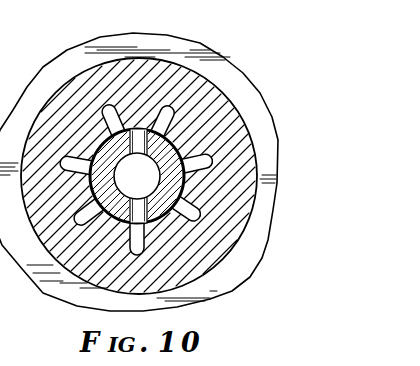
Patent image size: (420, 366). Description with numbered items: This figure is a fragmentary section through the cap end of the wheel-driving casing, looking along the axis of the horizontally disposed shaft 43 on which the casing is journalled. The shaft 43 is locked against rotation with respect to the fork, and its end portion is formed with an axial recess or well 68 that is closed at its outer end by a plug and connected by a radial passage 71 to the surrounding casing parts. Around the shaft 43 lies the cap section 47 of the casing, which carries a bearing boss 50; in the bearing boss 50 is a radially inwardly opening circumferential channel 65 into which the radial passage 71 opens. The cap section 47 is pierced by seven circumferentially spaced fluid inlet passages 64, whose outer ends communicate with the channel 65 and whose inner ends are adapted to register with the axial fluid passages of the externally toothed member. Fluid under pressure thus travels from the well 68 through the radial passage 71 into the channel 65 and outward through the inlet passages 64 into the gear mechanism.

The cap section 47 is at (270, 160).
The bearing boss 50 is at (258, 204).
The shaft 43 is at (103, 184).
The circumferential channel 65 is at (176, 143).
The radial passage 71 is at (143, 142).
The axial well 68 is at (148, 196).
The fluid inlet passages 64 is at (118, 117).